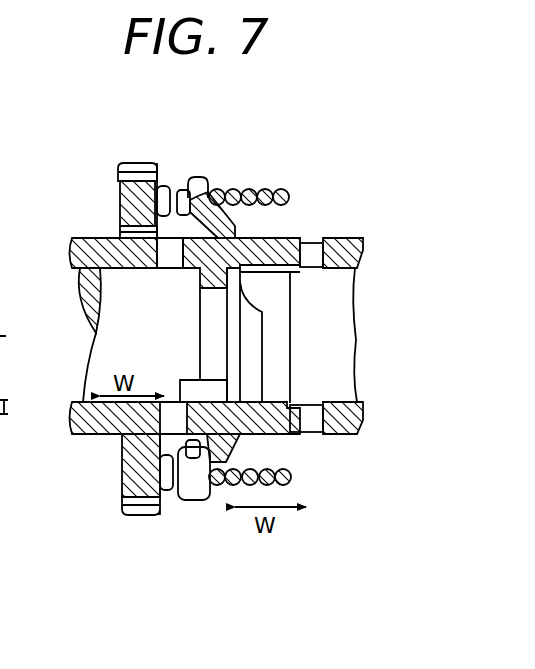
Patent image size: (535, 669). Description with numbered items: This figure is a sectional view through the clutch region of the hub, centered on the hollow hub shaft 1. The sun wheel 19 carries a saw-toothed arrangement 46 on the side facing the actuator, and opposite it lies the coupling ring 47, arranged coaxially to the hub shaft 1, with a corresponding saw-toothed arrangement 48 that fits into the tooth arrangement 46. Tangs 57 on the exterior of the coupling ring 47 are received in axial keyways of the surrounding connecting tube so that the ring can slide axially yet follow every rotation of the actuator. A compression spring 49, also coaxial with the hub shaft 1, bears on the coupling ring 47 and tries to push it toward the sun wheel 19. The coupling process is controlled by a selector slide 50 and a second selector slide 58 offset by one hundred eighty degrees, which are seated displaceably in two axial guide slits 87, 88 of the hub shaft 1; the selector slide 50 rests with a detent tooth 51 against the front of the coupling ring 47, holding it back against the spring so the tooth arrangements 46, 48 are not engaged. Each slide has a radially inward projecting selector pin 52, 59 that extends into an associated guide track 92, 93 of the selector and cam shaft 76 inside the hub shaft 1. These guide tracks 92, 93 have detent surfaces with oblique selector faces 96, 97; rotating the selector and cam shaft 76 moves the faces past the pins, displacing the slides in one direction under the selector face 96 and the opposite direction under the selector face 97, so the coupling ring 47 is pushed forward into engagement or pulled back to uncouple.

The hub shaft 1 is at (362, 247).
The sun wheel 19 is at (122, 205).
The saw-toothed arrangement 46 is at (170, 200).
The coupling ring 47 is at (203, 500).
The saw-toothed arrangement 48 is at (181, 210).
The compression spring 49 is at (285, 192).
The selector slide 50 is at (330, 447).
The detent tooth 51 is at (187, 240).
The selector pin 52 is at (270, 412).
The tangs 57 is at (199, 178).
The second selector slide 58 is at (296, 236).
The selector pin 59 is at (200, 300).
The selector and cam shaft 76 is at (80, 298).
The axial guide slit 87 is at (310, 405).
The axial guide slit 88 is at (312, 262).
The guide track 92 is at (123, 440).
The guide track 93 is at (260, 367).
The selector face 96 is at (178, 374).
The selector face 97 is at (287, 293).